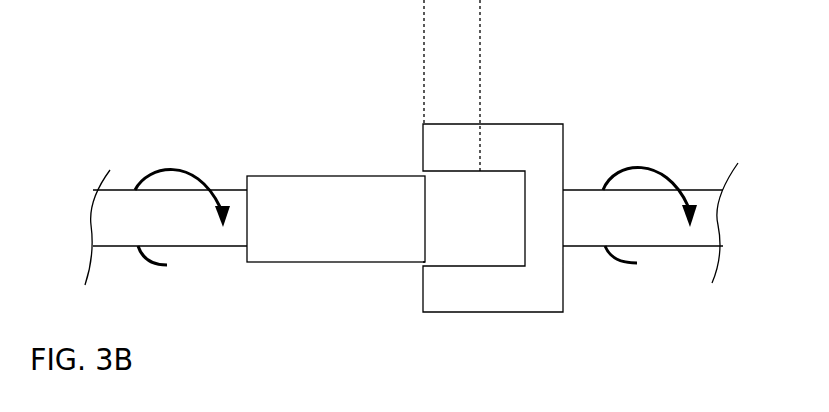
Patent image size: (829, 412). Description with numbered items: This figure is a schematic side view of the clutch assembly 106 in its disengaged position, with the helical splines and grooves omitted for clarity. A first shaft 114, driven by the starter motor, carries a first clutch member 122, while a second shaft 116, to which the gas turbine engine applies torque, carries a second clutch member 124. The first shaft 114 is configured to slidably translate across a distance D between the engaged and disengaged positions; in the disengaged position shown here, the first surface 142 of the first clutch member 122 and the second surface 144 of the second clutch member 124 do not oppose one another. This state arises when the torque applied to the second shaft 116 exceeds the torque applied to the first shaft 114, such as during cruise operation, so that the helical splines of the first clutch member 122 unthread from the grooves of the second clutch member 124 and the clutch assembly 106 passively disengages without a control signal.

The clutch assembly 106 is at (283, 60).
The first shaft 114 is at (200, 247).
The second shaft 116 is at (693, 247).
The first clutch member 122 is at (335, 176).
The second clutch member 124 is at (503, 123).
The first surface 142 is at (343, 245).
The second surface 144 is at (423, 262).